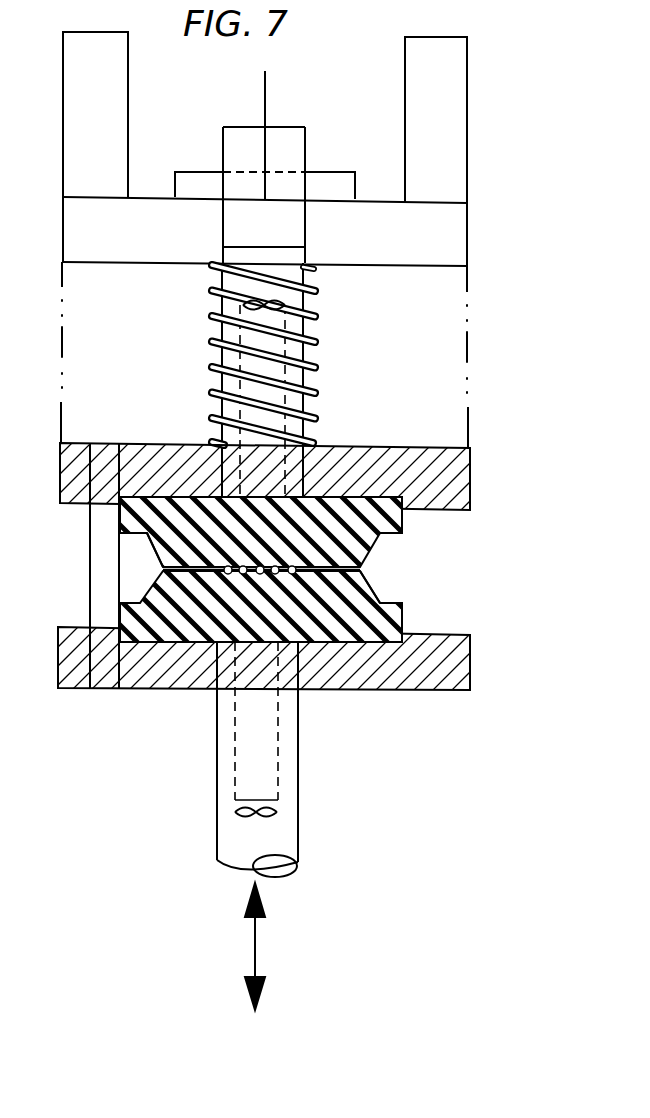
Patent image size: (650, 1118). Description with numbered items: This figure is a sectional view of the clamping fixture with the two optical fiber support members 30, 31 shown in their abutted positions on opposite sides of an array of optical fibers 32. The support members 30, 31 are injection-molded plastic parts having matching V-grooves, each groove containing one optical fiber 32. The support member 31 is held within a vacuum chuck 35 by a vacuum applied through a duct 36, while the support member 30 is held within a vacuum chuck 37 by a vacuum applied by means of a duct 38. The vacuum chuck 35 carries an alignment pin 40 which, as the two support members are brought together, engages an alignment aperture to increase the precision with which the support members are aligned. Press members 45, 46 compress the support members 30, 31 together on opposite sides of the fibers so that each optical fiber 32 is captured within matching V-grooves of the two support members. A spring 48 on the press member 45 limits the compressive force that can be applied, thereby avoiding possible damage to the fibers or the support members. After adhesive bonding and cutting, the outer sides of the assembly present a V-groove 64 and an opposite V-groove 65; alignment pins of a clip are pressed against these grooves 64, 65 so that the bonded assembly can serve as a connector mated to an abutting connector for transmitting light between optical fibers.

The optical fiber support member 30 is at (380, 540).
The optical fiber support member 31 is at (402, 622).
The optical fibers 32 is at (225, 575).
The vacuum chuck 35 is at (465, 486).
The duct 36 is at (285, 348).
The vacuum chuck 37 is at (463, 665).
The duct 38 is at (280, 765).
The alignment pin 40 is at (92, 560).
The press member 45 is at (213, 305).
The press member 46 is at (299, 832).
The spring 48 is at (307, 397).
The V-groove 64 is at (147, 535).
The V-groove 65 is at (373, 593).